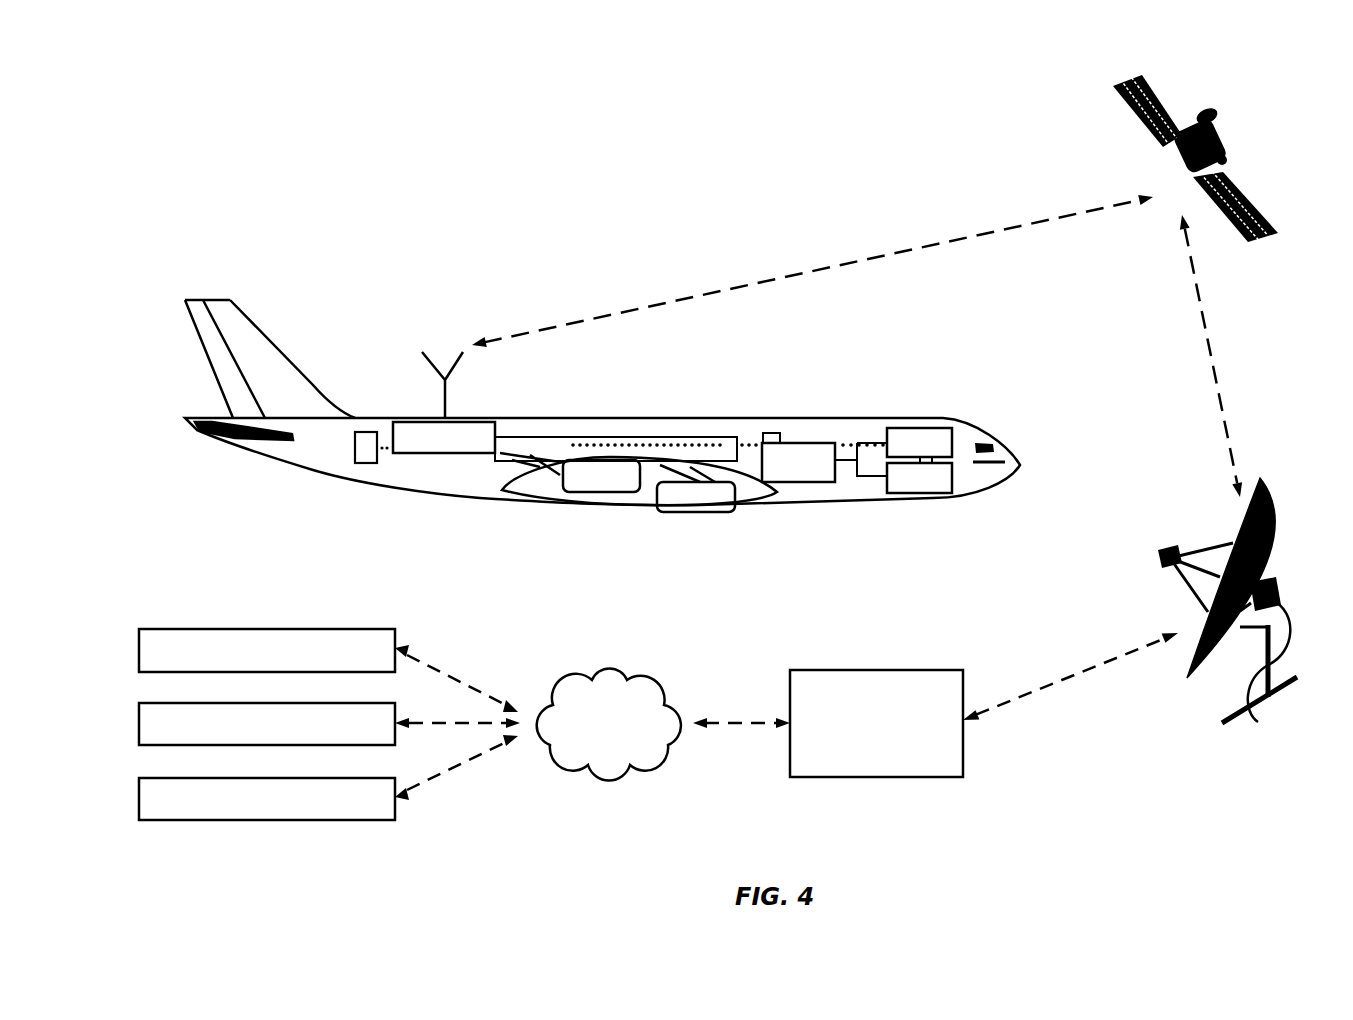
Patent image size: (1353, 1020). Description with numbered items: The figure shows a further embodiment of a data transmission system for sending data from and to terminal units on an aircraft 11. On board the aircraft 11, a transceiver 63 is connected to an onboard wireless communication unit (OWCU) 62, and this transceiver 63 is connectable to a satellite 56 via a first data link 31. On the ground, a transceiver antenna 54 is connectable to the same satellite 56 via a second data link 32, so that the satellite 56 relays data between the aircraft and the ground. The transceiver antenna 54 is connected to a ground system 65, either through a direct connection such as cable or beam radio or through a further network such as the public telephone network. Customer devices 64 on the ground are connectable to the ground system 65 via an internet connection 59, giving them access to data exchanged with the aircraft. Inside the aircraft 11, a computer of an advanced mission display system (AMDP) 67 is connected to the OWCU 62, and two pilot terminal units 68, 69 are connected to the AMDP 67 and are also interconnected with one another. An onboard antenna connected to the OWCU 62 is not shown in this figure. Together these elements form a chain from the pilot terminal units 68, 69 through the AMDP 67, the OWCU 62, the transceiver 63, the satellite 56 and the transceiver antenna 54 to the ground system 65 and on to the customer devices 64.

The aircraft 11 is at (662, 418).
The first data link 31 is at (862, 260).
The second data link 32 is at (1215, 368).
The transceiver antenna 54 is at (1265, 490).
The satellite 56 is at (1243, 188).
The internet connection 59 is at (608, 670).
The onboard wireless communication unit (OWCU) 62 is at (483, 418).
The transceiver 63 is at (428, 365).
The customer devices 64 is at (268, 618).
The ground system 65 is at (880, 670).
The advanced mission display system (AMDP) computer 67 is at (798, 443).
The pilot terminal unit 68 is at (922, 427).
The pilot terminal unit 69 is at (922, 493).